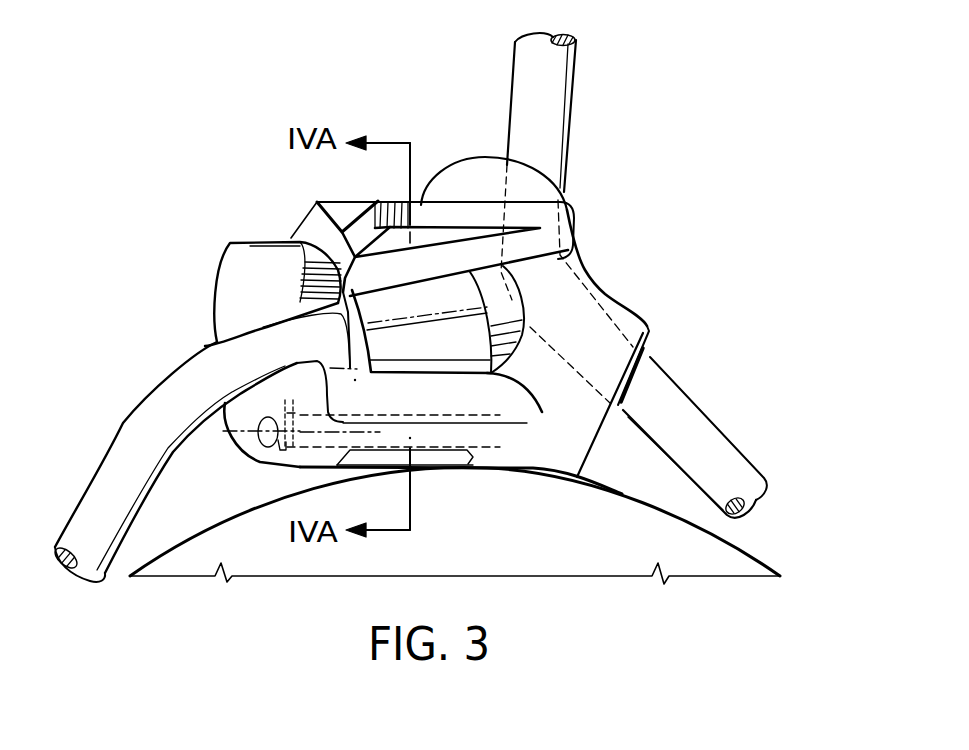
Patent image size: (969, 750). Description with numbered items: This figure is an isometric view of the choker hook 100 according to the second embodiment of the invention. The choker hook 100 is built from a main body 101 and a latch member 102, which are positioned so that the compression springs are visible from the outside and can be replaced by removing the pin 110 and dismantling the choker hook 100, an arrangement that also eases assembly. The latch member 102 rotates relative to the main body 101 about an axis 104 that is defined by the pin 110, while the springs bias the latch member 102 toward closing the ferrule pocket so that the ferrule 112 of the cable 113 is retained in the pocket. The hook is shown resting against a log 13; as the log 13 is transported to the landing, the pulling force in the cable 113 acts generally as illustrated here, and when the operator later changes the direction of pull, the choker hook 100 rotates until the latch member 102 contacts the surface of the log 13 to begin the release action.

The choker hook 100 is at (607, 182).
The main body 101 is at (606, 294).
The latch member 102 is at (338, 212).
The axis 104 is at (227, 428).
The pin 110 is at (443, 415).
The ferrule 112 is at (530, 323).
The cable 113 is at (570, 113).
The log 13 is at (623, 492).